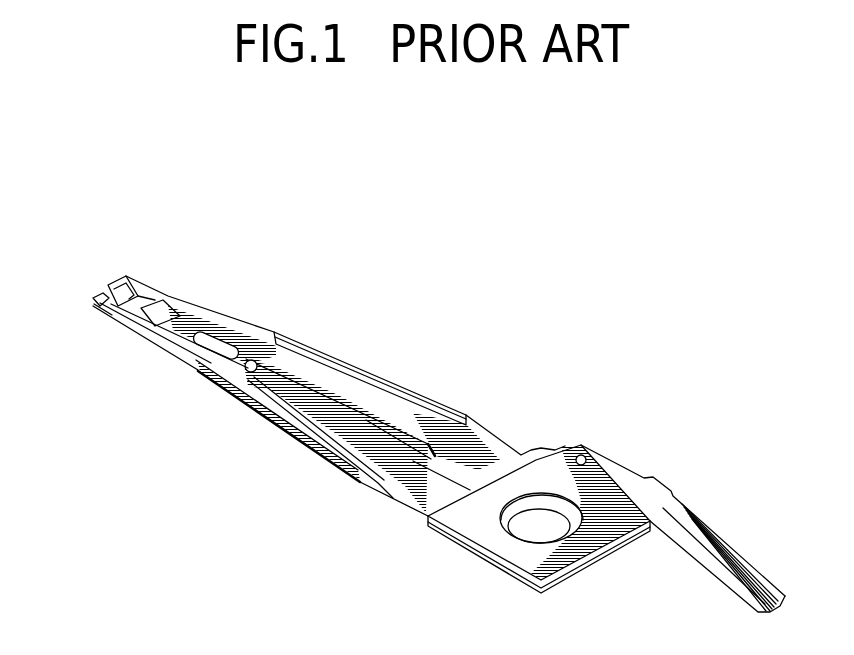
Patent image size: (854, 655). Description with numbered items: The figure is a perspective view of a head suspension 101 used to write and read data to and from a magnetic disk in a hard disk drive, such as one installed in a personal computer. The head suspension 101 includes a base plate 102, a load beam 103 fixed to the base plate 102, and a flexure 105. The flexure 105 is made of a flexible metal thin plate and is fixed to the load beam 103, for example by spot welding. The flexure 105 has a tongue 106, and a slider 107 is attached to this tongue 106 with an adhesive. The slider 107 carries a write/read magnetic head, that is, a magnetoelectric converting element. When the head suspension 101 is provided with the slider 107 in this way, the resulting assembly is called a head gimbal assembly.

The head suspension 101 is at (558, 319).
The base plate 102 is at (510, 547).
The load beam 103 is at (477, 442).
The flexure 105 is at (242, 348).
The tongue 106 is at (88, 292).
The slider 107 is at (125, 281).